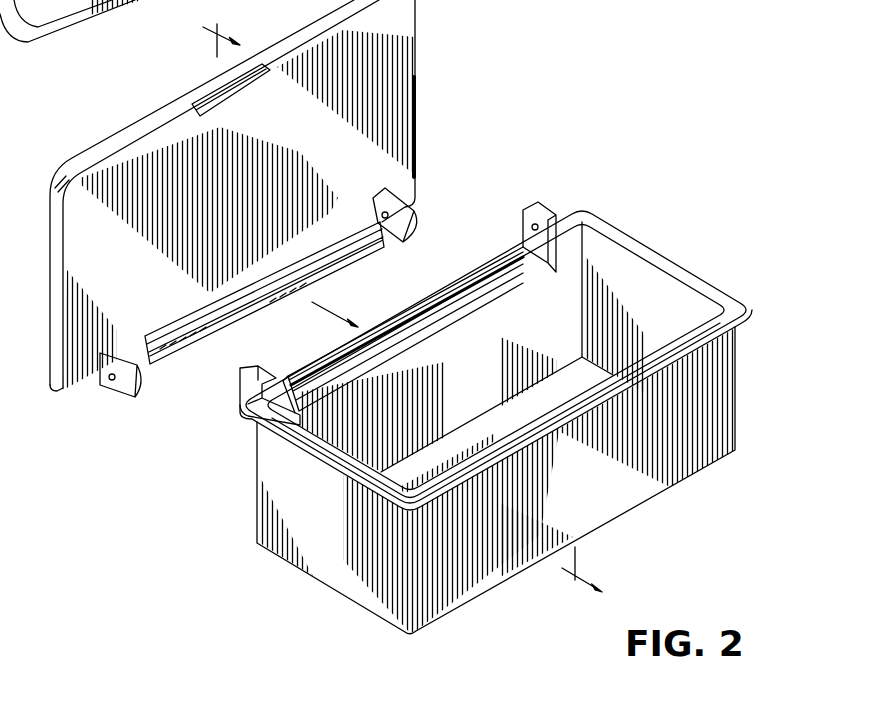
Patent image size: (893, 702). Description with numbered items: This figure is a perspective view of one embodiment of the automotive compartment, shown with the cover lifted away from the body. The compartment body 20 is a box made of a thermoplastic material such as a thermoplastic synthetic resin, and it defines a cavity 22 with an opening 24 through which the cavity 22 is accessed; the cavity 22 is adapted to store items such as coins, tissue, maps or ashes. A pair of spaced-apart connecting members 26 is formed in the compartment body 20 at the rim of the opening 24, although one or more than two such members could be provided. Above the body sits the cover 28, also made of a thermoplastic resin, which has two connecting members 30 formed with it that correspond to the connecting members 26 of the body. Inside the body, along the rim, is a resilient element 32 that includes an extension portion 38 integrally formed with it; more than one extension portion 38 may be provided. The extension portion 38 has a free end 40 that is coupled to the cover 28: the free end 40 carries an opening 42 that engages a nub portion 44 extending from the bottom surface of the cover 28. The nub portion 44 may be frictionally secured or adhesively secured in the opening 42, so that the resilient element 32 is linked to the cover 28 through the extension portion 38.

The compartment body 20 is at (740, 390).
The cavity 22 is at (680, 288).
The opening 24 is at (640, 251).
The connecting members 26 is at (547, 206).
The cover 28 is at (418, 12).
The connecting members 30 is at (425, 215).
The resilient element 32 is at (452, 398).
The extension portion 38 is at (417, 316).
The free end 40 is at (483, 262).
The opening 42 is at (410, 316).
The nub portion 44 is at (228, 330).